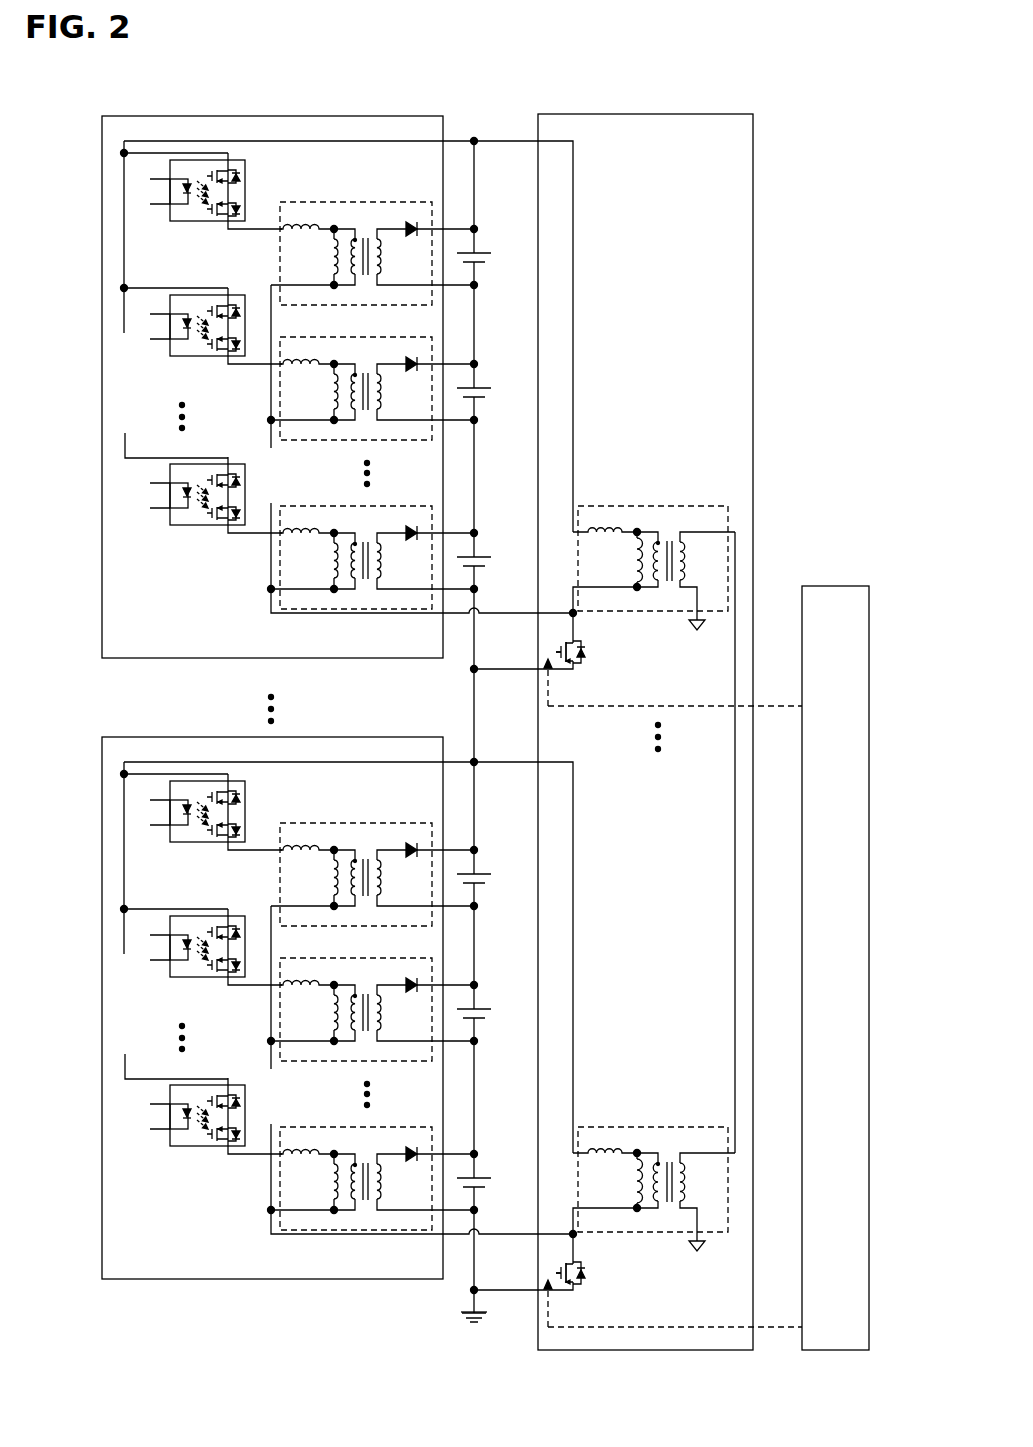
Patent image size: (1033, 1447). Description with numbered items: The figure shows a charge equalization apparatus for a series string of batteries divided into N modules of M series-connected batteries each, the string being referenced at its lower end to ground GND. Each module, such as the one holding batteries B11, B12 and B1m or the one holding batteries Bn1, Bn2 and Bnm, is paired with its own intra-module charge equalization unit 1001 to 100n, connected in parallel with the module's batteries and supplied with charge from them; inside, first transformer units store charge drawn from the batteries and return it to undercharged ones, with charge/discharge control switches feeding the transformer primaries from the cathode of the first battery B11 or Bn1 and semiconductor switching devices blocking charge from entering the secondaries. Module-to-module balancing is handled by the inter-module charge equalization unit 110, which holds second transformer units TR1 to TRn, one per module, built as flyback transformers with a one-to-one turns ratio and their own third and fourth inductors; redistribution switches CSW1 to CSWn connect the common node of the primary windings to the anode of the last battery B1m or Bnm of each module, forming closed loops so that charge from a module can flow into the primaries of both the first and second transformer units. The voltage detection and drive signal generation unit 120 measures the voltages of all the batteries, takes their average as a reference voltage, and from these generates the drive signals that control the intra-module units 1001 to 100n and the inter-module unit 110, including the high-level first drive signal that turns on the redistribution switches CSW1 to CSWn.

The intra-module charge equalization unit 1001 is at (101, 178).
The intra-module charge equalization unit 100n is at (305, 1008).
The inter-module charge equalization unit 110 is at (695, 113).
The voltage detection and drive signal generation unit 120 is at (826, 585).
The first battery B11 is at (490, 257).
The battery B12 is at (490, 392).
The last battery B1m is at (494, 564).
The first battery Bn1 is at (492, 878).
The battery Bn2 is at (492, 1013).
The last battery Bnm is at (495, 1182).
The second transformer unit TR1 is at (637, 589).
The second transformer unit TRn is at (637, 1210).
The redistribution switch CSW1 is at (593, 664).
The redistribution switch CSWn is at (593, 1285).
The ground GND is at (481, 1331).